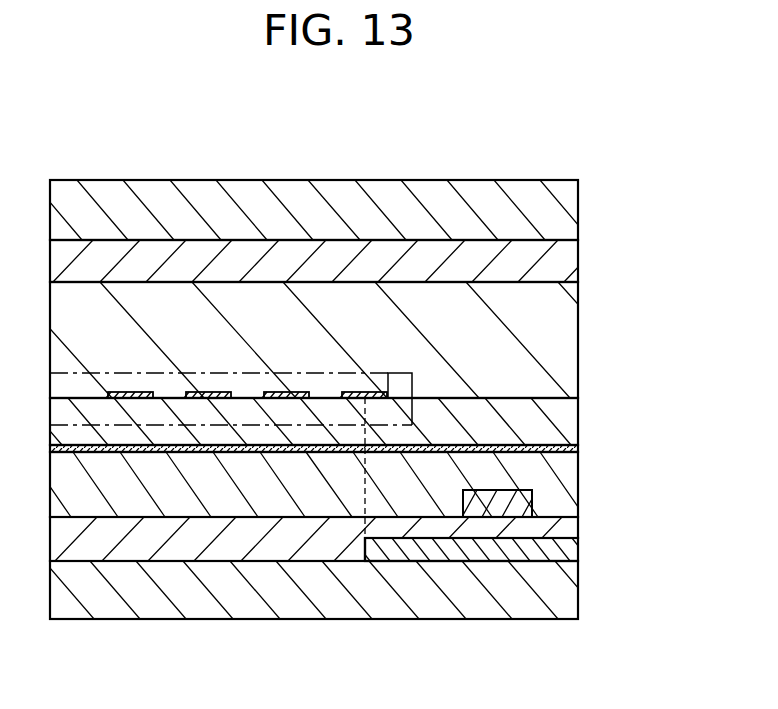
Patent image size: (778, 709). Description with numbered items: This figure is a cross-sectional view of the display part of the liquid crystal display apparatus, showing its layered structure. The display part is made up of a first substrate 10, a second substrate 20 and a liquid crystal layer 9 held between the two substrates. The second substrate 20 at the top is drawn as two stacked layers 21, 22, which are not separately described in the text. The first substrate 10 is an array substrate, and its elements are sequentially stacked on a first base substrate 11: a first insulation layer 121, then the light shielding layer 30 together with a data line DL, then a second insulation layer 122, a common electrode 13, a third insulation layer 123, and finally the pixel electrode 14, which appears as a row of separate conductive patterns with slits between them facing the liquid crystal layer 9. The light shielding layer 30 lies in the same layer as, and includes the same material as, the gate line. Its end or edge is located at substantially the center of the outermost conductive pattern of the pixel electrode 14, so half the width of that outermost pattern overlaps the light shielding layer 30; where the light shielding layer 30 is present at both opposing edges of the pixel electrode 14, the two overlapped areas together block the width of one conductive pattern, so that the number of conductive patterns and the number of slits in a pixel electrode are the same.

The second substrate 20 is at (362, 231).
The upper substrate 21 is at (578, 213).
The color filter layer 22 is at (349, 261).
The liquid crystal layer 9 is at (578, 343).
The first substrate 10 is at (366, 527).
The pixel electrode 14 is at (412, 383).
The third insulation layer 123 is at (578, 420).
The common electrode 13 is at (578, 448).
The second insulation layer 122 is at (578, 484).
The first insulation layer 121 is at (578, 526).
The light shielding layer 30 is at (578, 551).
The first base substrate 11 is at (348, 590).
The data line DL is at (503, 508).